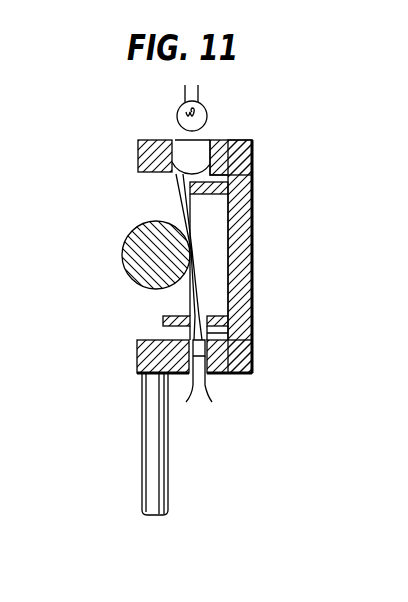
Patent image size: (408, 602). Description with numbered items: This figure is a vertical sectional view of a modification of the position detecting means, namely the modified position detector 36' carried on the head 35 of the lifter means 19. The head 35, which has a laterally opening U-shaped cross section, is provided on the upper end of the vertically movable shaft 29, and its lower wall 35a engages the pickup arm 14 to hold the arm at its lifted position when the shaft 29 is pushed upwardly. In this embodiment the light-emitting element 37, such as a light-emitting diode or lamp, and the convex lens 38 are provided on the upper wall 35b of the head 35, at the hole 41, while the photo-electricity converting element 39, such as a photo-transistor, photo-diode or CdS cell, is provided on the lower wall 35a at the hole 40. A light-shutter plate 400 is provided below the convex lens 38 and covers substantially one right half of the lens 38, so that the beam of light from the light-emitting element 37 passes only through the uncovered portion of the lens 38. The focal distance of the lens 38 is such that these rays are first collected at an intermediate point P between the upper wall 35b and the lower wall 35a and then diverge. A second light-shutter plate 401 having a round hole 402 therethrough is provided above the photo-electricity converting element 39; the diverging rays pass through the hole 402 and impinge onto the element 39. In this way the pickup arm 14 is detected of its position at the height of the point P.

The light-emitting element 37 is at (200, 119).
The hole 41 is at (207, 141).
The upper wall 35b is at (152, 140).
The convex lens 38 is at (180, 180).
The modified position detector 36' is at (97, 194).
The light-shutter plate 400 is at (206, 194).
The pickup arm 14 is at (124, 250).
The intermediate point P is at (193, 250).
The head 35 is at (242, 250).
The light-shutter plate 401 is at (163, 319).
The round hole 402 is at (200, 318).
The photo-electricity converting element 39 is at (214, 338).
The lower wall 35a is at (140, 349).
The hole 40 is at (205, 358).
The shaft 29 is at (165, 455).
The lifter means 19 is at (119, 424).